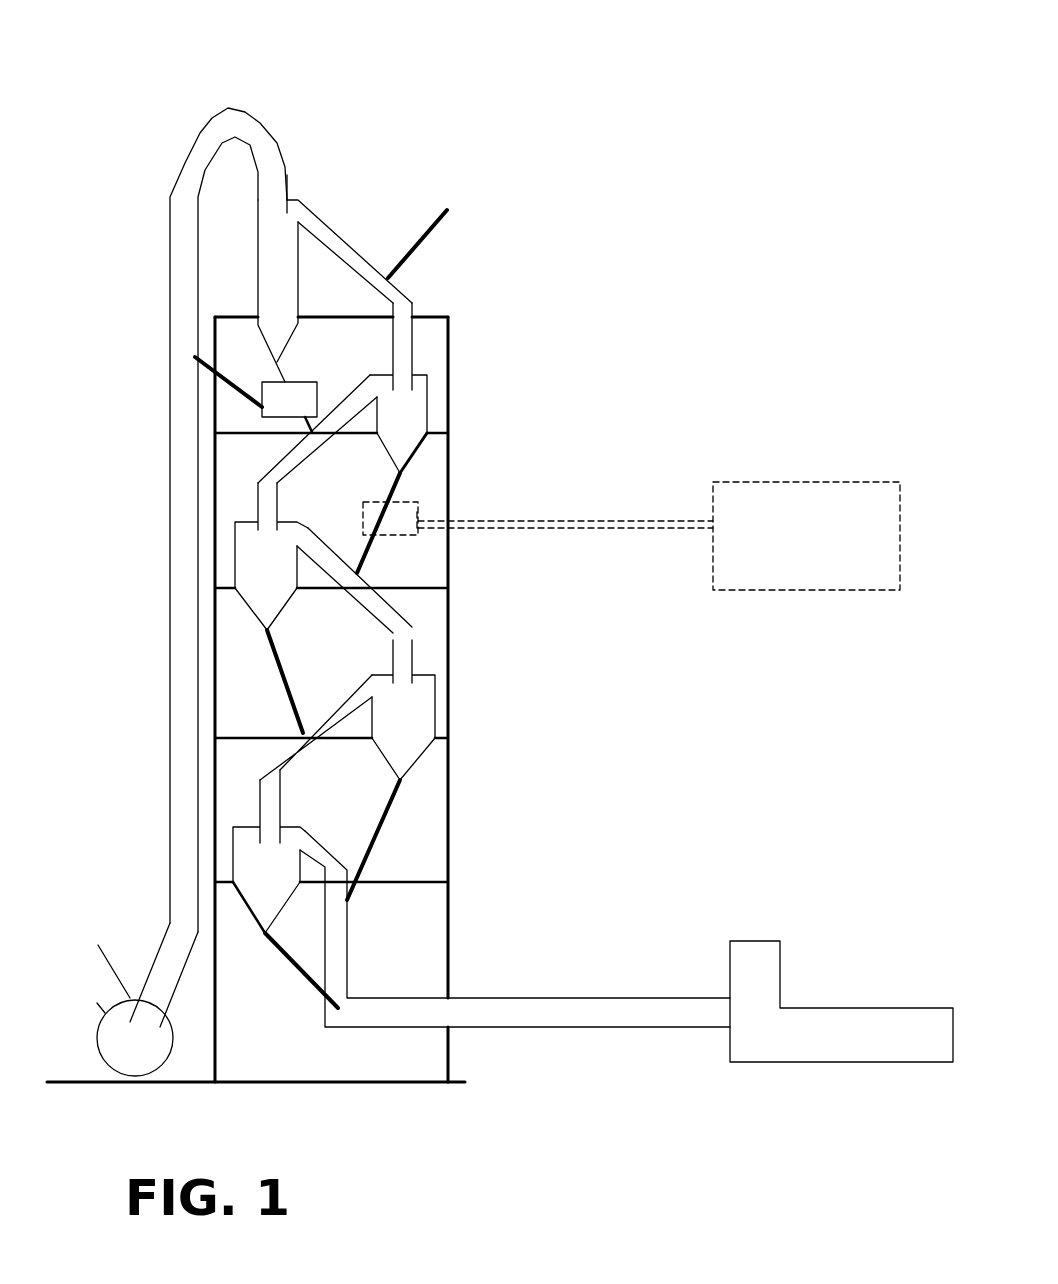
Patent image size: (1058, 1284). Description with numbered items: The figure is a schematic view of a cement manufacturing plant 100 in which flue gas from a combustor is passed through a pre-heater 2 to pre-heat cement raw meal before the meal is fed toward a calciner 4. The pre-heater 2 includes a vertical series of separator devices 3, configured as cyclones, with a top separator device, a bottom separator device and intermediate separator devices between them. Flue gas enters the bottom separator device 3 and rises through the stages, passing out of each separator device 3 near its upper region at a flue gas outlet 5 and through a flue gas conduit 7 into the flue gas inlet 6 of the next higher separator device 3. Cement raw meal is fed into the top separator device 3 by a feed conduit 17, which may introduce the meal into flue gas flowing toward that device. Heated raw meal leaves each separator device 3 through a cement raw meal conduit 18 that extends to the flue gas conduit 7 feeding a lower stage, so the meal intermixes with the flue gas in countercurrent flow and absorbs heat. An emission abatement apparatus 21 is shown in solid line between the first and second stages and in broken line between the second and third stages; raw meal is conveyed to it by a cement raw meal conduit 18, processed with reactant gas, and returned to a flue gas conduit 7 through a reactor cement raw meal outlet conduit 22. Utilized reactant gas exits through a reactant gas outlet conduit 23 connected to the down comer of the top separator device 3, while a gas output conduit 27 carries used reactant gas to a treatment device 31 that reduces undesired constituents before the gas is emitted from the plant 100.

The cement manufacturing plant 100 is at (632, 239).
The pre-heater 2 is at (587, 420).
The separator device 3 is at (272, 251).
The calciner 4 is at (743, 977).
The flue gas outlet 5 is at (401, 381).
The flue gas inlet 6 is at (370, 381).
The flue gas conduit 7 is at (370, 267).
The feed conduit 17 is at (417, 238).
The cement raw meal conduit 18 is at (288, 388).
The emission abatement apparatus 21 is at (267, 383).
The reactor cement raw meal outlet conduit 22 is at (305, 422).
The reactant gas outlet conduit 23 is at (205, 370).
The gas output conduit 27 is at (605, 522).
The treatment device 31 is at (752, 526).